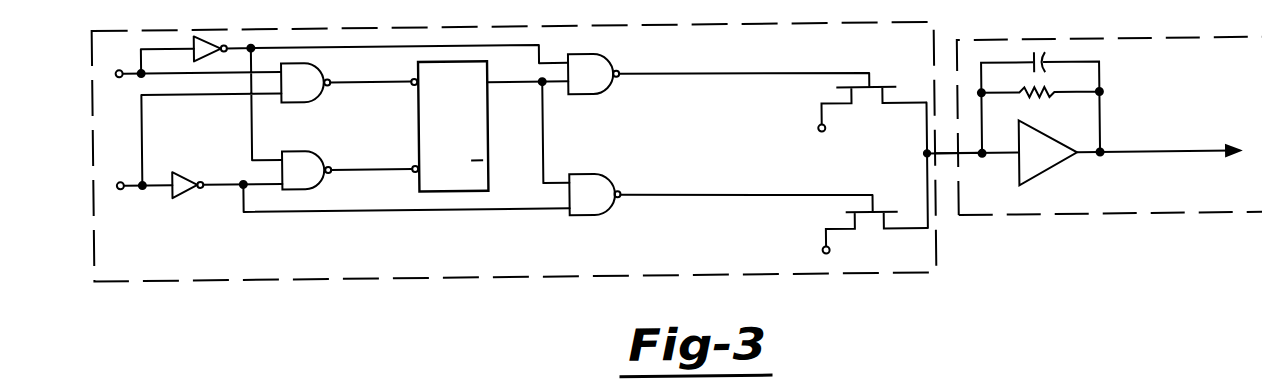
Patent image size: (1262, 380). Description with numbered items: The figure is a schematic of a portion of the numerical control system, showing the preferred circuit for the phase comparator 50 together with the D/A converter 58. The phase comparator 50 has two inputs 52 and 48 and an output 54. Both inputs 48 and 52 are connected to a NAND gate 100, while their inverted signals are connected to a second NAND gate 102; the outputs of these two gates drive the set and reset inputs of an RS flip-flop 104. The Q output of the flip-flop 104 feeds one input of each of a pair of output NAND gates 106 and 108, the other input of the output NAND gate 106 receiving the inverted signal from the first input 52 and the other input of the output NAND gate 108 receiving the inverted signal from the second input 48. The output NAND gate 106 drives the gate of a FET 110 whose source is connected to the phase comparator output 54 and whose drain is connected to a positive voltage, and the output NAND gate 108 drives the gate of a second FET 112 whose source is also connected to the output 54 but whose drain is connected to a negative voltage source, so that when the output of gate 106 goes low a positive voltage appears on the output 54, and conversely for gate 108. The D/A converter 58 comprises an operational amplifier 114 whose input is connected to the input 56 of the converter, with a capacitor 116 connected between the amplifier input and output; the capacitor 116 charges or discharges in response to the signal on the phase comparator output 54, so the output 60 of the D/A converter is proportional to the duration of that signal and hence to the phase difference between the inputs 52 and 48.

The phase comparator input 48 is at (117, 184).
The phase comparator 50 is at (463, 279).
The phase comparator input 52 is at (118, 72).
The phase comparator output 54 is at (925, 158).
The input of the D/A converter 56 is at (948, 171).
The D/A converter 58 is at (1081, 222).
The output from the D/A converter 60 is at (1178, 157).
The NAND gate 100 is at (328, 100).
The second NAND gate 102 is at (323, 150).
The RS flip-flop 104 is at (418, 189).
The output NAND gate 106 is at (613, 68).
The output NAND gate 108 is at (608, 177).
The FET 110 is at (895, 46).
The second FET 112 is at (831, 221).
The operational amplifier 114 is at (1055, 170).
The capacitor 116 is at (1046, 60).